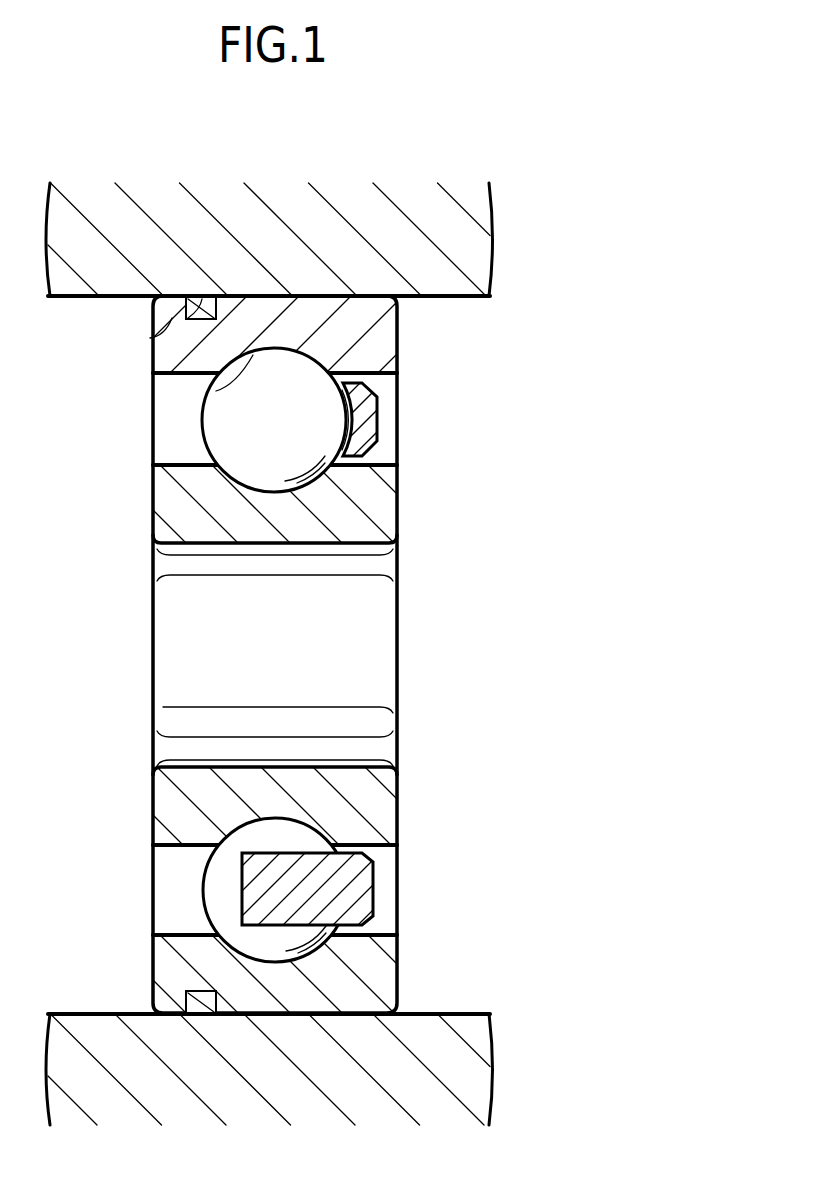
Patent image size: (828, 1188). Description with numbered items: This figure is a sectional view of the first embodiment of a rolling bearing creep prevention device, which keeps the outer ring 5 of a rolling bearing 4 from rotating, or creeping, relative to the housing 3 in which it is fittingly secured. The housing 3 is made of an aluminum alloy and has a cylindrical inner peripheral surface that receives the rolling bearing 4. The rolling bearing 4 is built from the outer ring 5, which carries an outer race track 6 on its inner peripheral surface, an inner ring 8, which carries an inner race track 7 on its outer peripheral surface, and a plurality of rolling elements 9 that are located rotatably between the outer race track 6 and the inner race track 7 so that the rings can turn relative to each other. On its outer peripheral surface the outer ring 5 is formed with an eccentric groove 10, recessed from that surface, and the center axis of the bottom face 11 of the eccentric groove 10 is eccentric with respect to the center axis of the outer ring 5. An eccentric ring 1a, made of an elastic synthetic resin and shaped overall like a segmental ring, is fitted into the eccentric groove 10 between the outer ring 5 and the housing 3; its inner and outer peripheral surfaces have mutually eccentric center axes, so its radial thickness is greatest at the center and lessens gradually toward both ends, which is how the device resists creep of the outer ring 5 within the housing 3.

The eccentric ring 1a is at (212, 297).
The housing 3 is at (322, 282).
The rolling bearing 4 is at (420, 368).
The outer ring 5 is at (378, 340).
The outer race track 6 is at (210, 392).
The inner race track 7 is at (298, 470).
The inner ring 8 is at (392, 528).
The rolling elements 9 is at (220, 427).
The eccentric groove 10 is at (197, 297).
The bottom face 11 is at (152, 338).